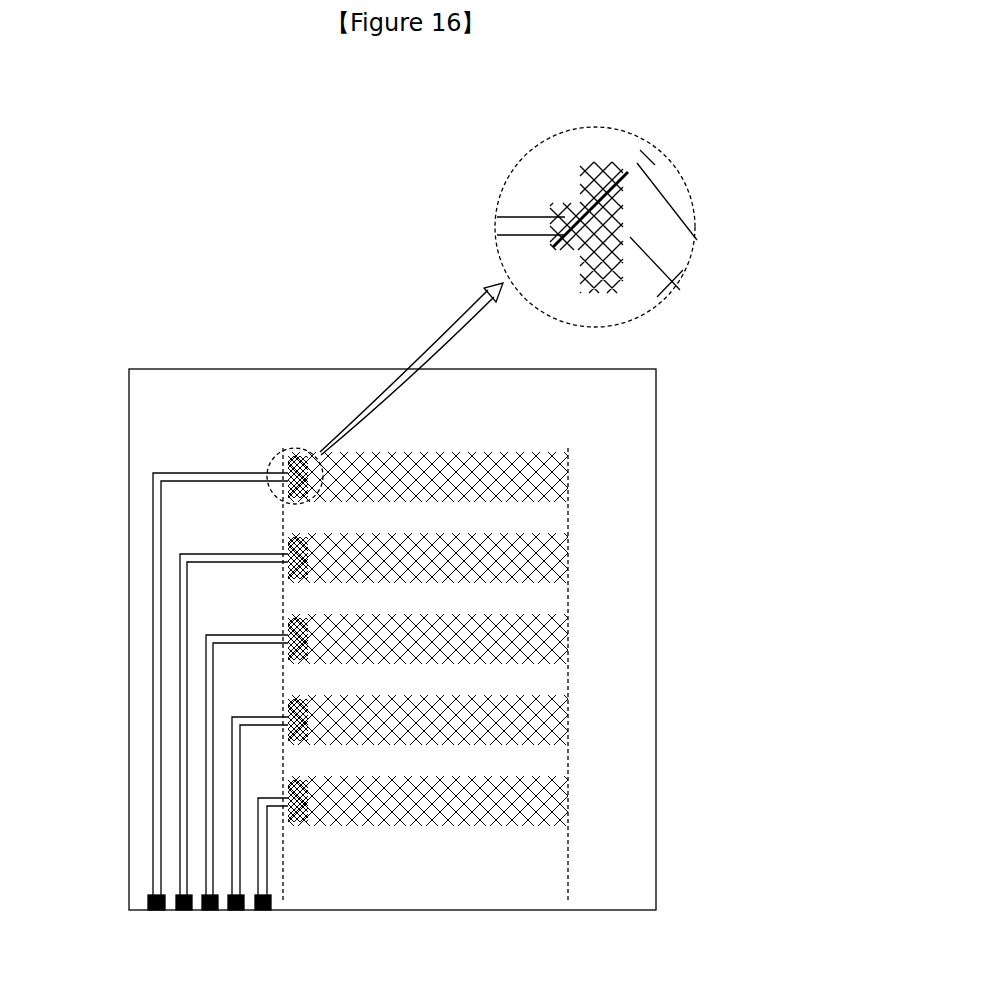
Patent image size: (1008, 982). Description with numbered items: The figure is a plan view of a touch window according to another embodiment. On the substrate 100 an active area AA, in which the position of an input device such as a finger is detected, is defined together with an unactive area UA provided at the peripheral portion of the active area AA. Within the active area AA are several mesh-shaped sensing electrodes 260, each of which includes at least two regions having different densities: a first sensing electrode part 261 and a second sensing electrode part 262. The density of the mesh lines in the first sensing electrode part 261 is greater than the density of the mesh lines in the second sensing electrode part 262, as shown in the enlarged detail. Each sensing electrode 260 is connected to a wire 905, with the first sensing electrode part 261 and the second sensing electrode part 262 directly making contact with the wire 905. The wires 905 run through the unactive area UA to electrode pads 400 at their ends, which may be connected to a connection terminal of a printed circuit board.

The substrate 100 is at (262, 425).
The sensing electrode 260 is at (395, 450).
The first sensing electrode part 261 is at (292, 462).
The second sensing electrode part 262 is at (300, 456).
The touch routing wire 905 is at (155, 520).
The electrode pad 400 is at (148, 906).
The unactive area UA is at (636, 411).
The active area AA is at (556, 518).